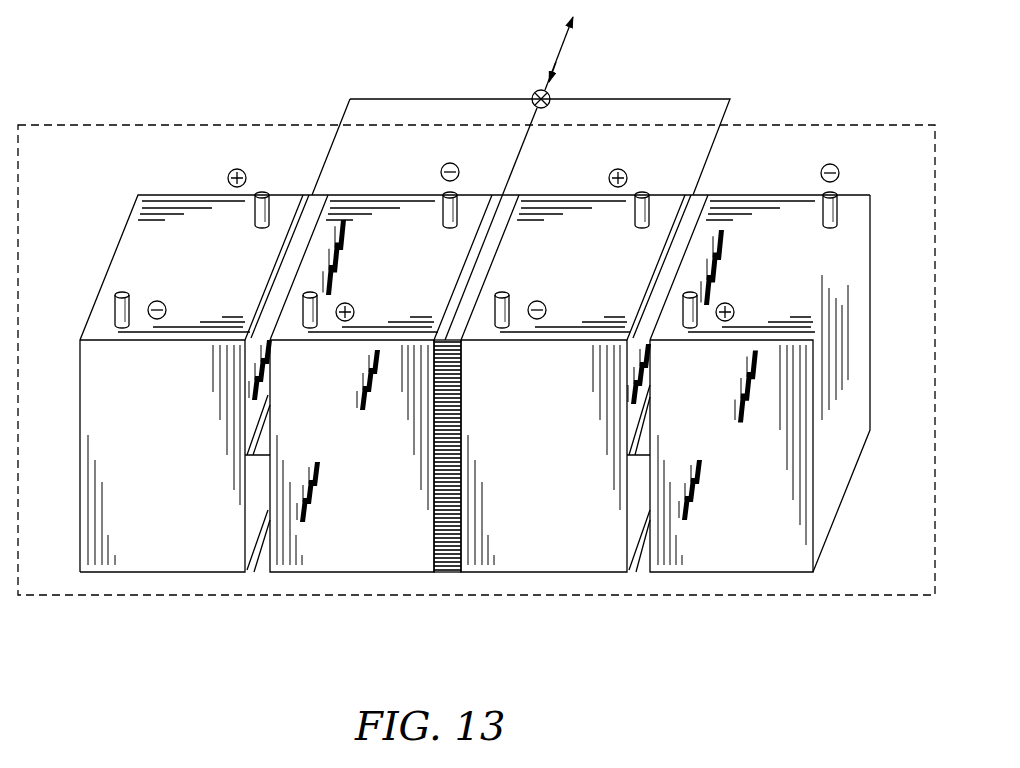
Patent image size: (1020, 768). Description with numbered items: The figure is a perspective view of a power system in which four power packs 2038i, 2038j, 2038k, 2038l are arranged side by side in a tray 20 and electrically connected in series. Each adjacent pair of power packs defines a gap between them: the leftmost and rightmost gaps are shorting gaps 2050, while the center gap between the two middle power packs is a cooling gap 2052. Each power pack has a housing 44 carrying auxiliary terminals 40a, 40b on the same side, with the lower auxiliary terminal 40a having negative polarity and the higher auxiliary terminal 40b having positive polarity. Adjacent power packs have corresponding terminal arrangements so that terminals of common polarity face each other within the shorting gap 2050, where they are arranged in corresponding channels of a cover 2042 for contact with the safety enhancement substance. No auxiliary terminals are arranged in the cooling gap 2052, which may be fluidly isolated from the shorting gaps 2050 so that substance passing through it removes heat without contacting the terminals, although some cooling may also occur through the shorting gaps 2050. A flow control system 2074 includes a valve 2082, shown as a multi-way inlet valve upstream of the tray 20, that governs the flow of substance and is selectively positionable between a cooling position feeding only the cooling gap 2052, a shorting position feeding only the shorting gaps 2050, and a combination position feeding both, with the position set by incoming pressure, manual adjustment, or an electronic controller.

The tray 20 is at (827, 143).
The flow control system 2074 is at (648, 92).
The valve 2082 is at (535, 93).
The power pack 2038i is at (152, 185).
The power pack 2038j is at (365, 576).
The power pack 2038k is at (565, 578).
The power pack 2038l is at (757, 180).
The housing 44 is at (80, 445).
The cover 2042 is at (288, 280).
The shorting gap 2050 is at (257, 578).
The cooling gap 2052 is at (448, 578).
The auxiliary terminal 40a is at (371, 418).
The auxiliary terminal 40b is at (352, 237).